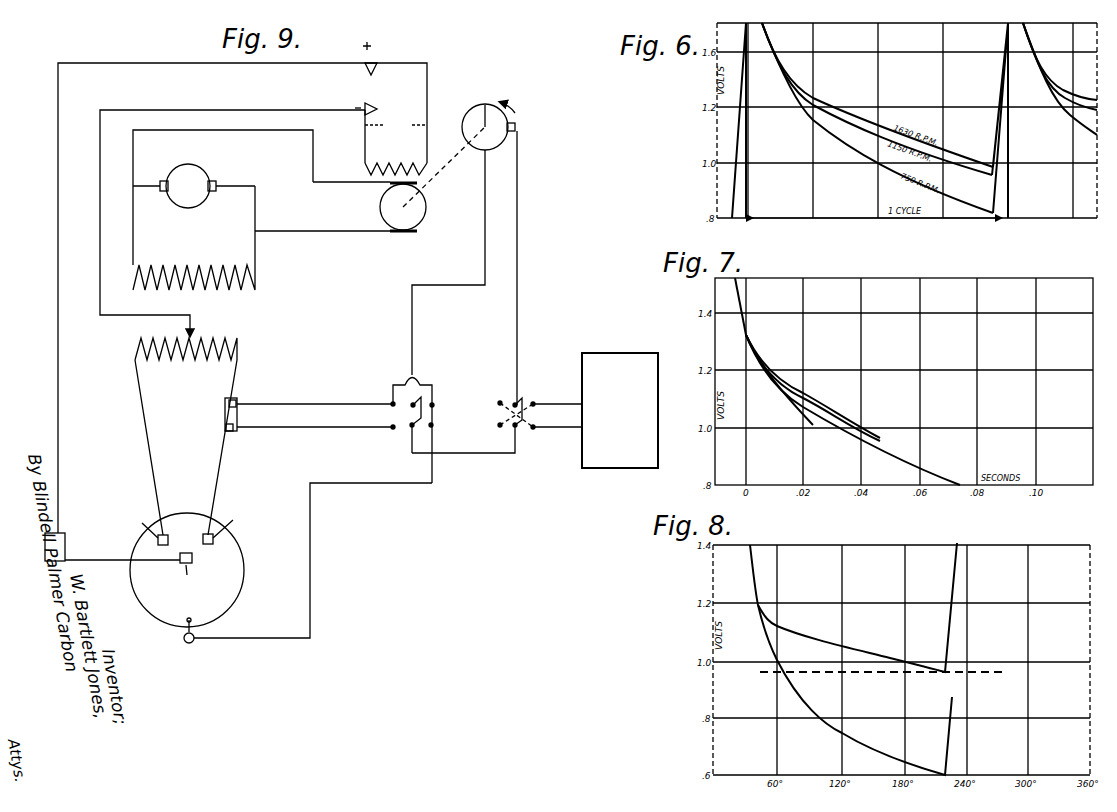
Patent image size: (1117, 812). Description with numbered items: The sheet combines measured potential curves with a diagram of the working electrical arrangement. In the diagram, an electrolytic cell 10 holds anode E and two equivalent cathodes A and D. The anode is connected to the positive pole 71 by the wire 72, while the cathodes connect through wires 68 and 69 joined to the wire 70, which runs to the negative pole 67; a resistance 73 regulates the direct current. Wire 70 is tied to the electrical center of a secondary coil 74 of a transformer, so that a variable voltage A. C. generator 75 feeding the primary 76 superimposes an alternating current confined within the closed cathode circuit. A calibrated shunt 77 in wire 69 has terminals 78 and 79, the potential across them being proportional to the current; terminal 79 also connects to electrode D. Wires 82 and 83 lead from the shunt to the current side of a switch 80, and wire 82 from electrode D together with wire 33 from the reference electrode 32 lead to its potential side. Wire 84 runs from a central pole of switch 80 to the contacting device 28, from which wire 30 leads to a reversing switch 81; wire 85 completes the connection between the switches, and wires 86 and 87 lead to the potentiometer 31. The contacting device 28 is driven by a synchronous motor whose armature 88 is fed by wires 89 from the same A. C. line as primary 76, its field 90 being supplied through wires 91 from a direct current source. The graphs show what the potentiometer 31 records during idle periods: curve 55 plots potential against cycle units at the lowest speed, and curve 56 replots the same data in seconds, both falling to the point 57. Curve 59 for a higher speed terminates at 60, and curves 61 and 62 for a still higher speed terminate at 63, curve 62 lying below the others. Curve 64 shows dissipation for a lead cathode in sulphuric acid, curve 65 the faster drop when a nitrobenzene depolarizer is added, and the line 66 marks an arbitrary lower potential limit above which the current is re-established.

In FIG. 9, the electrolytic cell 10 is at (238, 568).
In FIG. 9, the contact device 28 is at (487, 100).
In FIG. 9, the wire 30 is at (517, 268).
In FIG. 9, the potentiometer 31 is at (620, 410).
In FIG. 9, the reference electrode 32 is at (189, 644).
In FIG. 9, the wire 33 is at (366, 483).
In FIG. 6, the curve 55 is at (838, 145).
In FIG. 6, the curve 56 is at (857, 120).
In FIG. 7, the curve 56 is at (935, 467).
In FIG. 6, the point 57 is at (990, 210).
In FIG. 7, the point 57 is at (958, 482).
In FIG. 7, the curve 59 is at (836, 418).
In FIG. 7, the termination point 60 is at (880, 440).
In FIG. 6, the curve 61 is at (852, 107).
In FIG. 7, the curve 62 is at (790, 405).
In FIG. 7, the termination point 63 is at (815, 428).
In FIG. 8, the curve 64 is at (858, 656).
In FIG. 8, the curve 65 is at (812, 710).
In FIG. 8, the lower limit line 66 is at (985, 674).
In FIG. 9, the negative pole 67 is at (377, 108).
In FIG. 9, the wire 68 is at (147, 430).
In FIG. 9, the wire 69 is at (218, 465).
In FIG. 9, the wire 70 is at (287, 110).
In FIG. 9, the positive pole 71 is at (374, 66).
In FIG. 9, the wire 72 is at (145, 63).
In FIG. 9, the resistance 73 is at (62, 540).
In FIG. 9, the secondary coil 74 is at (190, 358).
In FIG. 9, the A. C. generator 75 is at (206, 175).
In FIG. 9, the primary coil 76 is at (203, 265).
In FIG. 9, the shunt 77 is at (225, 415).
In FIG. 9, the terminal 78 is at (235, 401).
In FIG. 9, the terminal 79 is at (233, 430).
In FIG. 9, the switch 80 is at (422, 400).
In FIG. 9, the reversing switch 81 is at (522, 398).
In FIG. 9, the wire 82 is at (342, 404).
In FIG. 9, the wire 83 is at (343, 427).
In FIG. 9, the wire 84 is at (451, 285).
In FIG. 9, the wire 85 is at (468, 453).
In FIG. 9, the wire 86 is at (564, 404).
In FIG. 9, the wire 87 is at (559, 427).
In FIG. 9, the synchronous motor armature 88 is at (420, 212).
In FIG. 9, the wires 89 is at (339, 231).
In FIG. 9, the field 90 is at (392, 163).
In FIG. 9, the wires 91 is at (396, 125).